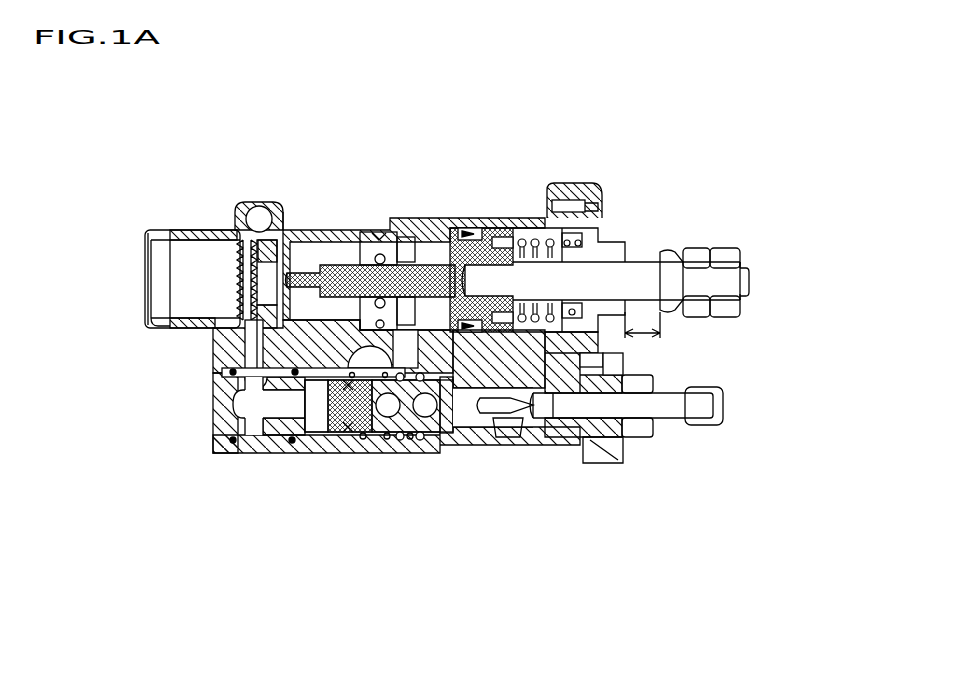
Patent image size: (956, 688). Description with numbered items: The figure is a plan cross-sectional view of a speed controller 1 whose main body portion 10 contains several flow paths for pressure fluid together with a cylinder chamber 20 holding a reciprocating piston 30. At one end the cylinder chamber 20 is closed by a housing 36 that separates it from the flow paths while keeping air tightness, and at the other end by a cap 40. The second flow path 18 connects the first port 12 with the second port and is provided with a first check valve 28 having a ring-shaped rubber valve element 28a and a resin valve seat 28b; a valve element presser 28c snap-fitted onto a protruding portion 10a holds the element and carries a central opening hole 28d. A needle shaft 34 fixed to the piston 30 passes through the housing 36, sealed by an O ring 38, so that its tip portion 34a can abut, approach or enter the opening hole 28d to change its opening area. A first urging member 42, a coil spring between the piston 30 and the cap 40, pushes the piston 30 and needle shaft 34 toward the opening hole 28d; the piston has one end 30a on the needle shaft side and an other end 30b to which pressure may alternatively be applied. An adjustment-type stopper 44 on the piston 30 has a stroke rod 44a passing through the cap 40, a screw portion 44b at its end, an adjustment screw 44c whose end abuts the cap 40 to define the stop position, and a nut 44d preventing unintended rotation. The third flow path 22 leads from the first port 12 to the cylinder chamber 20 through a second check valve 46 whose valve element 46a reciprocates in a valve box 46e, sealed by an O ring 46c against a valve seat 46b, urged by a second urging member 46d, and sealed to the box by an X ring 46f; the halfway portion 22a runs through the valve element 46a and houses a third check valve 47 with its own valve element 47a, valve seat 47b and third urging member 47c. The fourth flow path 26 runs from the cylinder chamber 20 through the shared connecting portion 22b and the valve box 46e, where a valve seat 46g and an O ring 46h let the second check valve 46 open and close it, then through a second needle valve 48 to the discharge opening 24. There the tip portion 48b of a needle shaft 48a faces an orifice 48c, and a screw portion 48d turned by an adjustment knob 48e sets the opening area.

The speed controller 1 is at (814, 123).
The main body portion 10 is at (562, 185).
The protruding portion 10a is at (152, 297).
The first port 12 is at (148, 272).
The second flow path 18 is at (172, 230).
The cylinder chamber 20 is at (420, 218).
The third flow path 22 is at (387, 318).
The halfway portion of third flow path 22a is at (232, 404).
The connecting portion 22b is at (405, 333).
The discharge opening 24 is at (505, 416).
The fourth flow path 26 is at (510, 440).
The first check valve 28 is at (228, 202).
The valve element 28a is at (291, 212).
The valve seat 28b is at (262, 208).
The valve element presser 28c is at (243, 303).
The opening hole 28d is at (238, 280).
The piston 30 is at (480, 242).
The holder upper tab 30a is at (476, 232).
The other end of piston 30b is at (528, 230).
The needle shaft 34 is at (371, 225).
The tip portion 34a is at (299, 271).
The housing 36 is at (366, 240).
The O ring 38 is at (400, 233).
The cap 40 is at (587, 218).
The first urging member 42 is at (534, 228).
The adjustment-type stopper 44 is at (648, 224).
The stroke rod 44a is at (664, 256).
The screw portion 44b is at (692, 249).
The adjustment screw 44c is at (720, 249).
The nut 44d is at (761, 237).
The second check valve 46 is at (364, 486).
The valve element 46a is at (313, 447).
The valve seat 46b is at (368, 452).
The O ring 46c is at (333, 452).
The second urging member 46d is at (493, 472).
The valve box 46e is at (290, 447).
The X ring 46f is at (353, 452).
The valve seat 46g is at (440, 447).
The O ring 46h is at (455, 447).
The third check valve 47 is at (399, 484).
The valve element 47a is at (388, 440).
The valve seat 47b is at (365, 440).
The third urging member 47c is at (424, 465).
The second needle valve 48 is at (626, 456).
The needle shaft 48a is at (592, 420).
The tip portion 48b is at (545, 454).
The orifice 48c is at (558, 420).
The screw portion 48d is at (616, 405).
The adjustment knob 48e is at (698, 426).